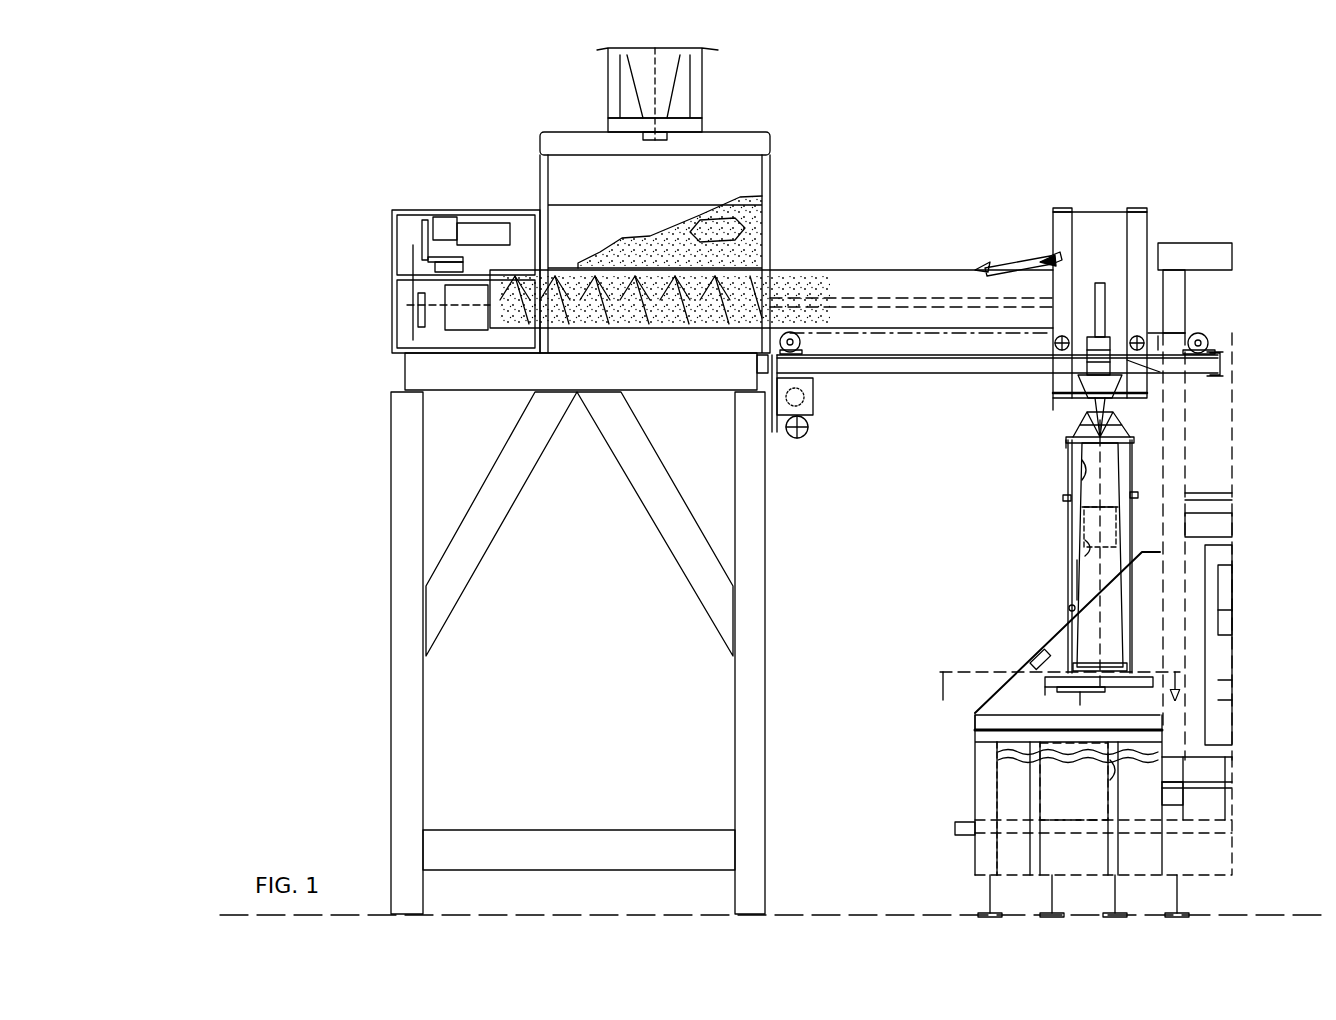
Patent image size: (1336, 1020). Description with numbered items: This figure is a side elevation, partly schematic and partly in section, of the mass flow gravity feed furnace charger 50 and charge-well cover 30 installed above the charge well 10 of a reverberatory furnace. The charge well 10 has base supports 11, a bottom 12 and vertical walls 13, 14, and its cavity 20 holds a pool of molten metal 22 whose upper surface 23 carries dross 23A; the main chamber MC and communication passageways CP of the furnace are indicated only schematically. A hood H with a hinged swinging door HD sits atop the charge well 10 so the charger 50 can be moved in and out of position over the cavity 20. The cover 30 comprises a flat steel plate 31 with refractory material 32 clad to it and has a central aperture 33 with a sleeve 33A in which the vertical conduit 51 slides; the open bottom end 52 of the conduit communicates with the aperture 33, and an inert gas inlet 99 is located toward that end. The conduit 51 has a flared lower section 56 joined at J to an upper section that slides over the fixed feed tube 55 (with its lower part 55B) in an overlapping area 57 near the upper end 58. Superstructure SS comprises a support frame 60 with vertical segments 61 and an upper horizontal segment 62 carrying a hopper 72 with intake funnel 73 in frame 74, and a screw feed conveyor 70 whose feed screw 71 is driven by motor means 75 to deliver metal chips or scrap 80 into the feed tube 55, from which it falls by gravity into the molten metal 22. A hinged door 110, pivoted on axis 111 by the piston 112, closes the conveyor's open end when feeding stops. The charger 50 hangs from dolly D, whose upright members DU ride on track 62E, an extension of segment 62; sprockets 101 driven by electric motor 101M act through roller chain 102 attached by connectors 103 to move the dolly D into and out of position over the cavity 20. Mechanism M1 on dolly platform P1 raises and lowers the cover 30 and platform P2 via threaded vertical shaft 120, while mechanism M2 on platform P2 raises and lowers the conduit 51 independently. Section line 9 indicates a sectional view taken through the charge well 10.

The section line 9- 9 is at (1058, 698).
The charge well 10 is at (1051, 813).
The base supports 11 is at (990, 900).
The bottom 12 is at (1015, 853).
The vertical wall 13 is at (995, 790).
The vertical wall 14 is at (1168, 852).
The charge well cavity 20 is at (1045, 795).
The molten metal 22 is at (1086, 807).
The upper surface 23 is at (1092, 760).
The dross 23A is at (1108, 765).
The charge-well cover 30 is at (1050, 641).
The flat steel plate 31 is at (1050, 680).
The refractory material 32 is at (1080, 698).
The central aperture 33 is at (1092, 693).
The sleeve 33A is at (1120, 665).
The mass flow gravity feed furnace charger 50 is at (1072, 499).
The conduit 51 is at (1133, 493).
The bottom end 52 is at (1118, 688).
The upper fixed feed tube 55 is at (1085, 472).
The holder lower side 55B is at (1090, 545).
The lower section 56 is at (1075, 580).
The overlapping slidable area 57 is at (1108, 530).
The upper end 58 is at (1108, 420).
The support frame 60 is at (521, 633).
The vertical segments 61 is at (405, 435).
The upper horizontal segment 62 is at (427, 372).
The track 62E is at (895, 374).
The screw feed conveyor 70 is at (771, 253).
The feed screw 71 is at (770, 272).
The hopper 72 is at (700, 216).
The intake funnel 73 is at (688, 90).
The frame 74 is at (661, 94).
The screw feed conveyor motor means 75 is at (492, 215).
The metal chips or scrap 80 is at (702, 261).
The inert gas inlet 99 is at (1070, 606).
The two-way wind/rewind sprockets 101 is at (780, 340).
The electric motor 101M is at (807, 432).
The roller chain 102 is at (828, 334).
The connectors 103 is at (1157, 336).
The hinged door 110 is at (1059, 272).
The axis 111 is at (1040, 262).
The air- or fluid-actuated piston 112 is at (1012, 258).
The threaded vertical shaft 120 is at (1094, 283).
The dolly D is at (1121, 272).
The upright members DU is at (1060, 212).
The superstructure SS is at (896, 168).
The raising and lowering mechanism M1 is at (1140, 357).
The oscillating mechanism M2 is at (1137, 430).
The platform P1 is at (1053, 398).
The platform P2 is at (1068, 440).
The seam J is at (1102, 500).
The charge-well hood H is at (1152, 604).
The hinged swinging door HD is at (1040, 665).
The communication passageways CP is at (1240, 762).
The main chamber MC is at (1240, 790).